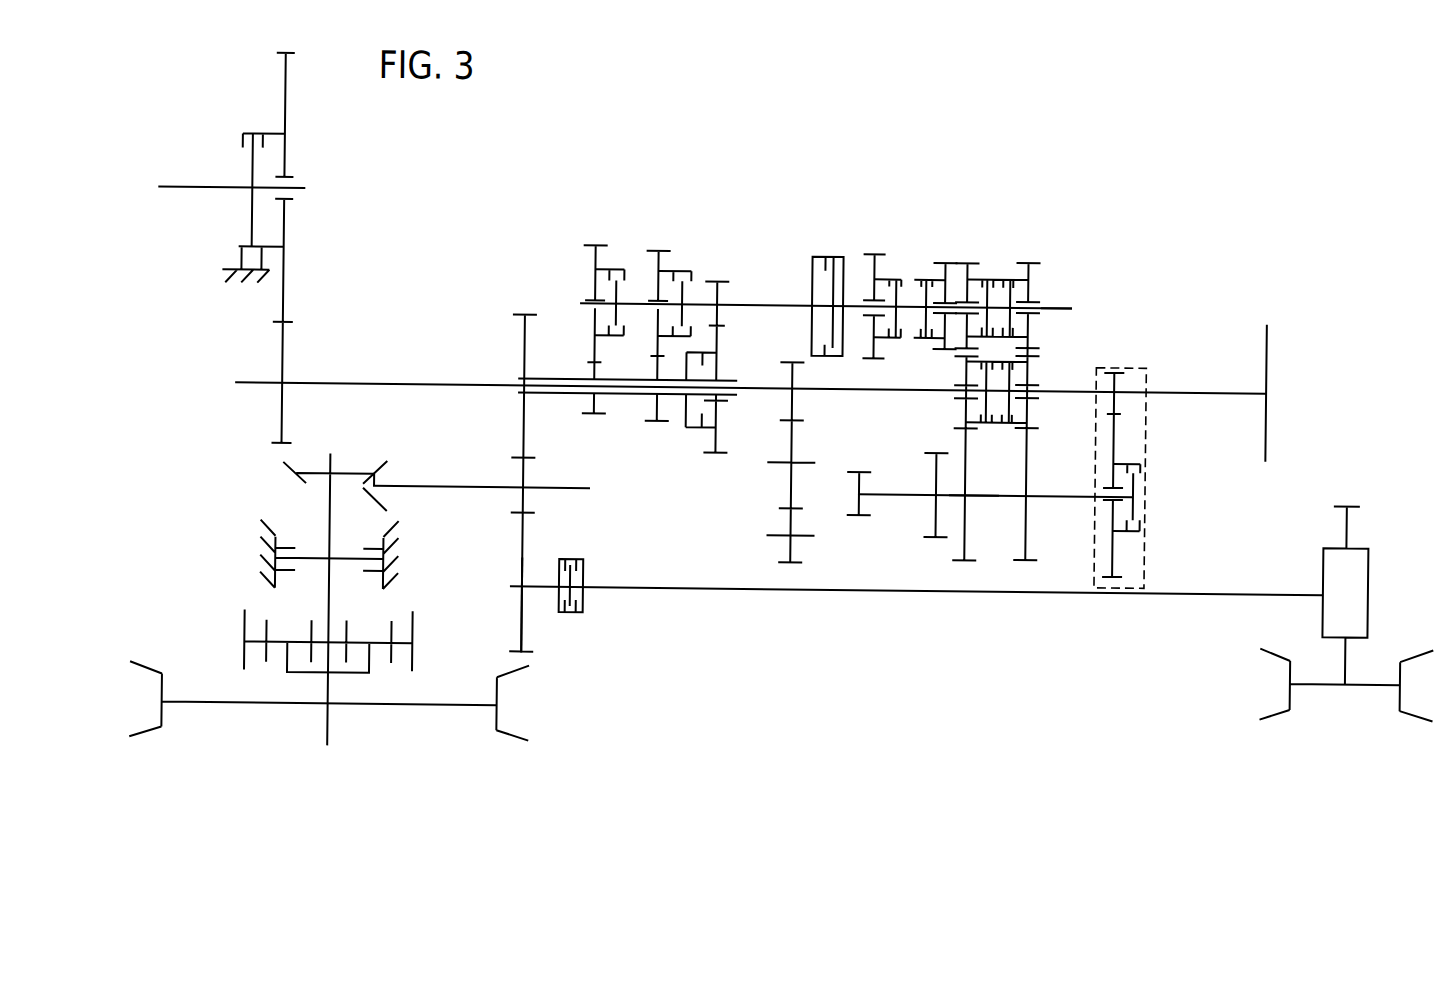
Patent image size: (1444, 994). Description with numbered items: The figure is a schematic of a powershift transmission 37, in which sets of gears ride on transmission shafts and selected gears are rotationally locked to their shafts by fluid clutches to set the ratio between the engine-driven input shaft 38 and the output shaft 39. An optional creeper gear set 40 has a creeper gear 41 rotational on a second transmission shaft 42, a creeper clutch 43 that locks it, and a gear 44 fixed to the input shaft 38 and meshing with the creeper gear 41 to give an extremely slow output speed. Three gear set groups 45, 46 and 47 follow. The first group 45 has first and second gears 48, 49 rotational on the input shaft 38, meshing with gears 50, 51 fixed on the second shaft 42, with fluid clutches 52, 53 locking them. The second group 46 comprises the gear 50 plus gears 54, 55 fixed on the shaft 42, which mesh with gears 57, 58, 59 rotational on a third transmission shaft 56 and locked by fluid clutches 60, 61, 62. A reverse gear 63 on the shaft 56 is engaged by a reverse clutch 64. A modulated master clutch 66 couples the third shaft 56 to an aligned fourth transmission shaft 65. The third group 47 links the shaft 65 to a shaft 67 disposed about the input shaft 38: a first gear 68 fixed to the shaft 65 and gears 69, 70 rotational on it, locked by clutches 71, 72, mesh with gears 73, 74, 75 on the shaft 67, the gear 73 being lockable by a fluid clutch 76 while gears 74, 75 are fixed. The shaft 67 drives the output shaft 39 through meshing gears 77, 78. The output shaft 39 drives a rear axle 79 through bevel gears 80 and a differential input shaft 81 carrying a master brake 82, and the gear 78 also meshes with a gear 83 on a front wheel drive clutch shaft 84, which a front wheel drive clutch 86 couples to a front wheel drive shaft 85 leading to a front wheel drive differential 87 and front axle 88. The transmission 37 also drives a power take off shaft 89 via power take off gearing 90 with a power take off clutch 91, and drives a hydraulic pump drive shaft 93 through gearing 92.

The transmission 37 is at (1002, 132).
The input shaft 38 is at (1206, 388).
The output shaft 39 is at (428, 491).
The creeper gear set 40 is at (1146, 571).
The creeper gear 41 is at (1116, 551).
The second transmission shaft 42 is at (1043, 493).
The creeper clutch 43 is at (1142, 460).
The gear 44 is at (1120, 364).
The first gear set group 45 is at (890, 538).
The second gear set group 46 is at (1134, 234).
The third gear set group 47 is at (678, 230).
The first gear 48 is at (959, 426).
The second gear 49 is at (1040, 425).
The gear 50 is at (974, 497).
The gear 51 is at (1022, 535).
The fluid clutch 52 is at (986, 420).
The fluid clutch 53 is at (1009, 420).
The gear 54 is at (859, 493).
The gear 55 is at (935, 524).
The third transmission shaft 56 is at (1068, 305).
The gear 57 is at (873, 253).
The gear 58 is at (966, 270).
The gear 59 is at (987, 277).
The fluid clutch 60 is at (895, 278).
The fluid clutch 61 is at (944, 261).
The fluid clutch 62 is at (1009, 277).
The reverse gear 63 is at (1040, 285).
The reverse clutch 64 is at (1030, 278).
The fourth transmission shaft 65 is at (770, 305).
The master clutch 66 is at (826, 256).
The shaft 67 is at (572, 381).
The first gear 68 is at (720, 316).
The gear 69 is at (655, 252).
The gear 70 is at (594, 261).
The clutch 71 is at (681, 263).
The clutch 72 is at (608, 271).
The gear 73 is at (712, 455).
The gear 74 is at (657, 412).
The gear 75 is at (594, 407).
The fluid clutch 76 is at (688, 430).
The gear 77 is at (522, 362).
The gear 78 is at (522, 461).
The rear axle 79 is at (402, 706).
The bevel gears 80 is at (375, 466).
The differential input shaft 81 is at (330, 493).
The master brake 82 is at (319, 563).
The gear 83 is at (526, 540).
The front wheel drive clutch shaft 84 is at (534, 592).
The front wheel drive shaft 85 is at (780, 591).
The front wheel drive clutch 86 is at (586, 602).
The front wheel drive differential 87 is at (1324, 562).
The front axle 88 is at (1360, 678).
The power take off shaft 89 is at (196, 193).
The power take off gearing 90 is at (325, 217).
The power take off clutch 91 is at (250, 139).
The gearing 92 is at (750, 475).
The hydraulic pump drive shaft 93 is at (780, 538).